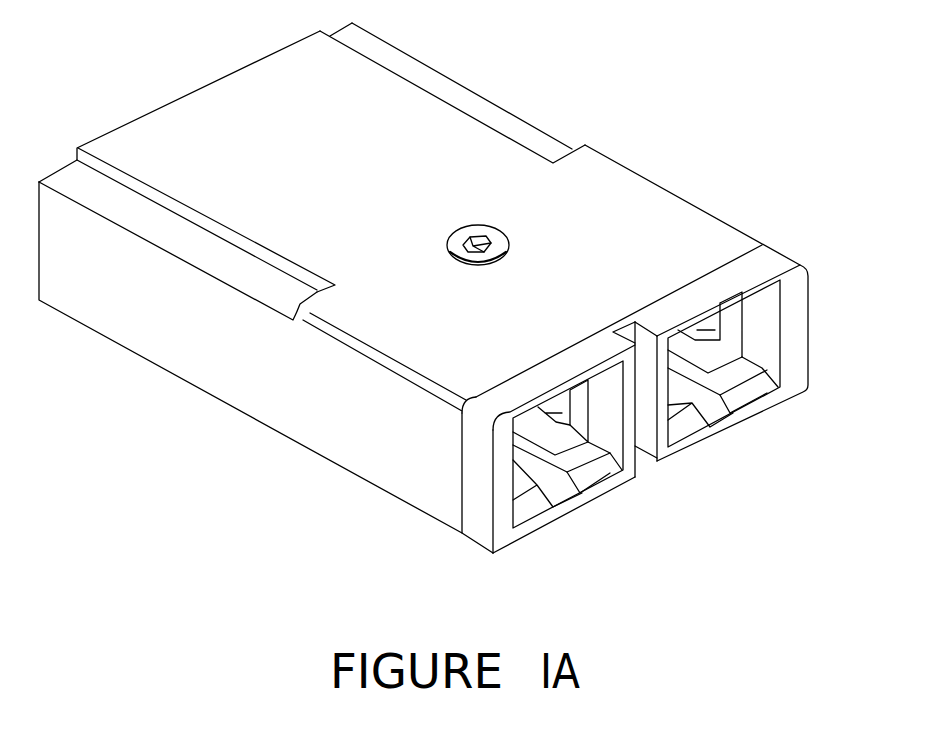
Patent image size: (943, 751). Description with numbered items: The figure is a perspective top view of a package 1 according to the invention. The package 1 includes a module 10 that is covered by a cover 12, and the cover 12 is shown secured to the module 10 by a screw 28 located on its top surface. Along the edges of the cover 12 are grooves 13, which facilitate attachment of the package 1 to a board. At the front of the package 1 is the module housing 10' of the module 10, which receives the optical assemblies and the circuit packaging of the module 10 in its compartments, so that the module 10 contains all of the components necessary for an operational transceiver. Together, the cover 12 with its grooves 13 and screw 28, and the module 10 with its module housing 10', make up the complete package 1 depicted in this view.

The package 1 is at (750, 216).
The module 10 is at (664, 444).
The module housing 10' is at (769, 360).
The cover 12 is at (615, 172).
The grooves 13 is at (66, 174).
The screw 28 is at (509, 241).